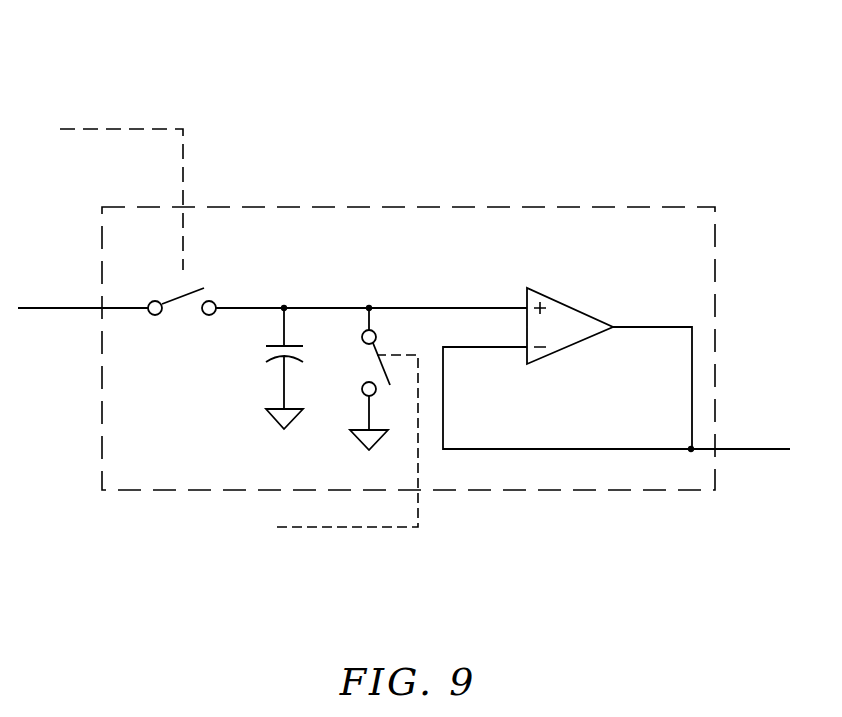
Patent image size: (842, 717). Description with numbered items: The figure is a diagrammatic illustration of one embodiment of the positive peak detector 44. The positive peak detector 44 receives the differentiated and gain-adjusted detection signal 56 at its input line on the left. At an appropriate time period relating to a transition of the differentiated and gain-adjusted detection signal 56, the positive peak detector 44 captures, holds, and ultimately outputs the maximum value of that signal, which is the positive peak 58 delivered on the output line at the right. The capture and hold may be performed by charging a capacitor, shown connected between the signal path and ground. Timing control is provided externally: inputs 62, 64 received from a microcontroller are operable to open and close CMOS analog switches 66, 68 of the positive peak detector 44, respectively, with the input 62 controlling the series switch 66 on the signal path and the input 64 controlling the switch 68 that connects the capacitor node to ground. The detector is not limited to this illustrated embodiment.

The positive peak detector 44 is at (423, 207).
The differentiated and gain-adjusted detection signal 56 is at (42, 308).
The positive peak 58 is at (769, 449).
The input 62 is at (104, 128).
The input 64 is at (300, 529).
The CMOS analog switch 66 is at (220, 290).
The CMOS analog switch 68 is at (398, 402).